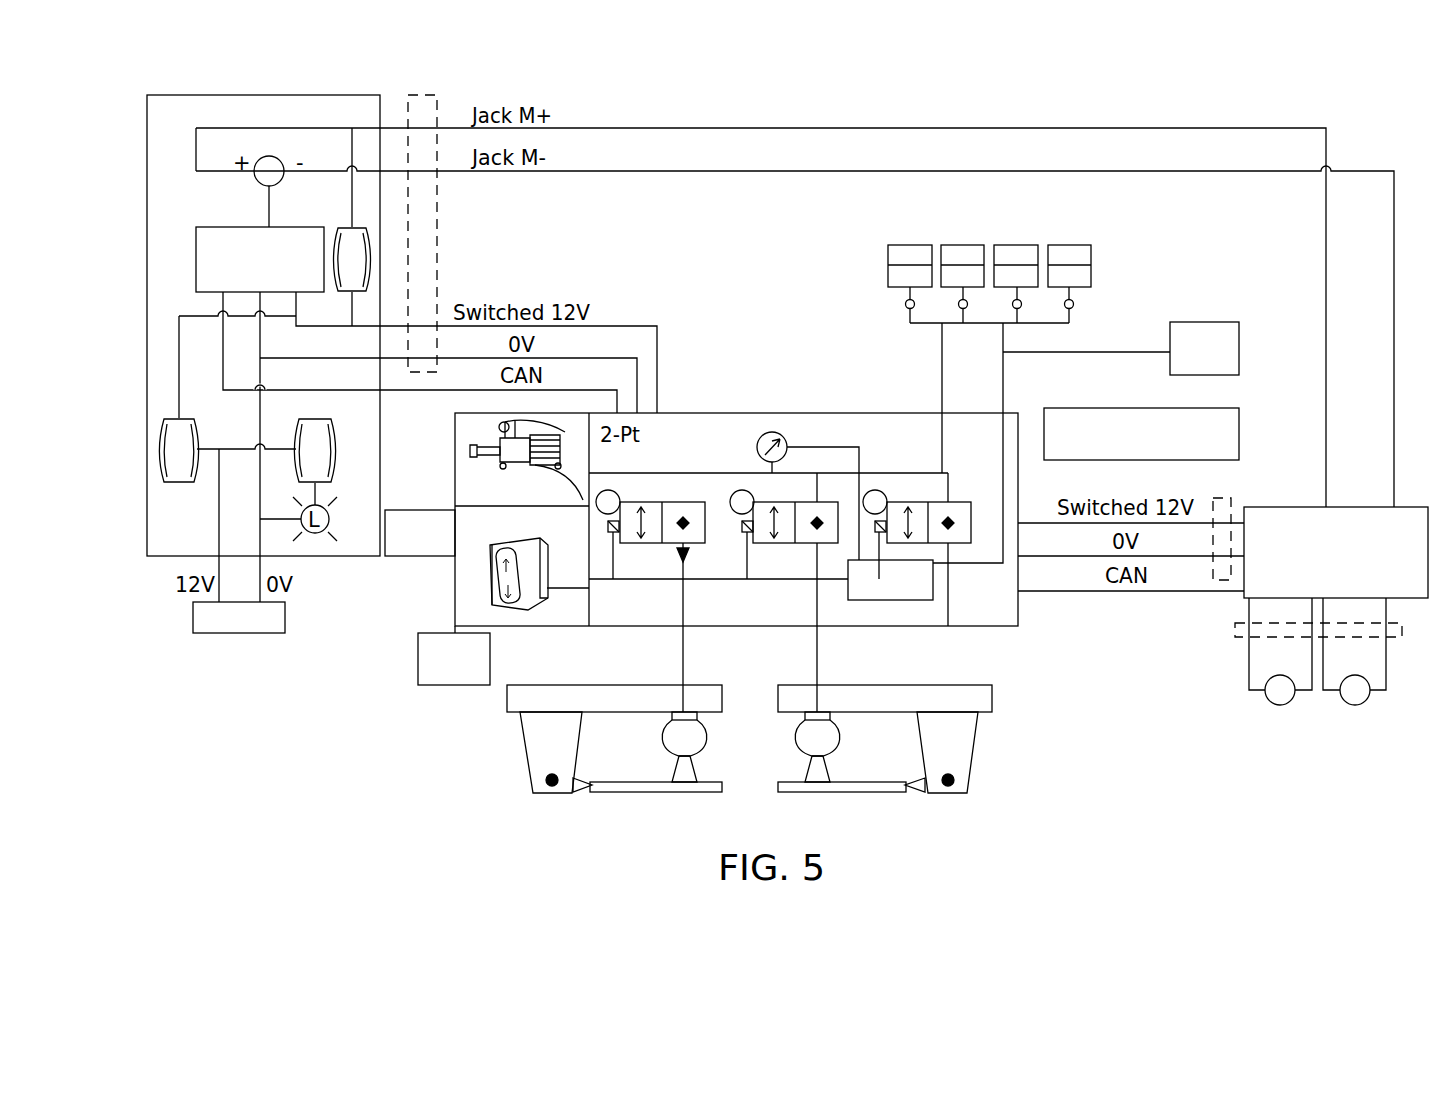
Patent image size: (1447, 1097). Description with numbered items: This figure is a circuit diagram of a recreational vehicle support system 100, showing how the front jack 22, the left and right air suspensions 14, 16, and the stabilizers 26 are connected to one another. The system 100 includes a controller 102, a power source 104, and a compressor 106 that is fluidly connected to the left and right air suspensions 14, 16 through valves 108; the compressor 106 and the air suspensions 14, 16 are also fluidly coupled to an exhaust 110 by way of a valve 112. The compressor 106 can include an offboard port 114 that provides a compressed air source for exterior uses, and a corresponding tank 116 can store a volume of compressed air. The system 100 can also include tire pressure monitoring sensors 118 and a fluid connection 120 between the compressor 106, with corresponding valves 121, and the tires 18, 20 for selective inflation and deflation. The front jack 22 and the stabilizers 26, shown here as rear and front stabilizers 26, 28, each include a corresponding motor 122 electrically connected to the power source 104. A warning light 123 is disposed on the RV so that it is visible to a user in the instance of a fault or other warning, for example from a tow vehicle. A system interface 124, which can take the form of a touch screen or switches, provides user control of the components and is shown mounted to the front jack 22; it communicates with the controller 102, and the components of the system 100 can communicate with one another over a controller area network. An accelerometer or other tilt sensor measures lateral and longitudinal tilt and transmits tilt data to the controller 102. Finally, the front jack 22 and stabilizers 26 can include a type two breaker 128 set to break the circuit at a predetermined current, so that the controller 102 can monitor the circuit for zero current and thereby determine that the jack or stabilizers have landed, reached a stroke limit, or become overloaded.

The RV support system 100 is at (1188, 106).
The controller 102 is at (933, 592).
The power source 104 is at (193, 618).
The compressor 106 is at (455, 463).
The valves 108 is at (697, 502).
The exhaust 110 is at (995, 650).
The valve 112 is at (920, 500).
The offboard port 114 is at (455, 685).
The tank 116 is at (420, 556).
The tire pressure monitoring sensors 118 is at (906, 305).
The fluid connection 120 is at (940, 358).
The valves 121 is at (940, 253).
The motor 122 is at (268, 156).
The warning light 123 is at (1203, 322).
The system interface 124 is at (196, 259).
The type 2 breaker 128 is at (423, 95).
The left air suspension 14 is at (700, 745).
The right air suspension 16 is at (800, 735).
The tires 18 is at (910, 245).
The tires 20 is at (1017, 245).
The front jack 22 is at (177, 95).
The stabilizers 26 is at (1249, 665).
The front stabilizer 28 is at (1386, 655).